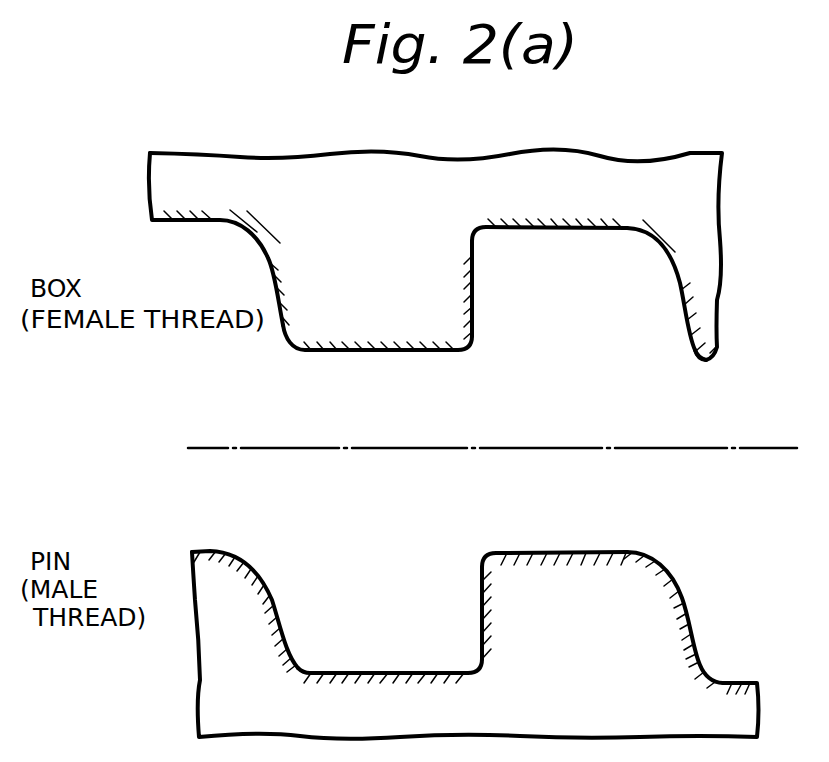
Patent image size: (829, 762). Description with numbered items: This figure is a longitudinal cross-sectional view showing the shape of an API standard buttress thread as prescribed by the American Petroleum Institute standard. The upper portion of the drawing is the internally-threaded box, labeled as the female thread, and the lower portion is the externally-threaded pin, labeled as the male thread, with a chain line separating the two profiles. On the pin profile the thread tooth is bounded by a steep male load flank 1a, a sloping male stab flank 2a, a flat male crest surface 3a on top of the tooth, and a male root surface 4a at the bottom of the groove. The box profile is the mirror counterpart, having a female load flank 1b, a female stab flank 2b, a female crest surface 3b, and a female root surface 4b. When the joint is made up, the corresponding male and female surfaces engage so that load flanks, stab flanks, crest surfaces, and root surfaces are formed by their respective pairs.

The male load flank 1a is at (481, 617).
The male stab flank 2a is at (689, 620).
The male crest surface 3a is at (565, 552).
The male root surface 4a is at (337, 672).
The female load flank 1b is at (471, 281).
The female stab flank 2b is at (683, 283).
The female crest surface 3b is at (550, 227).
The female root surface 4b is at (339, 349).